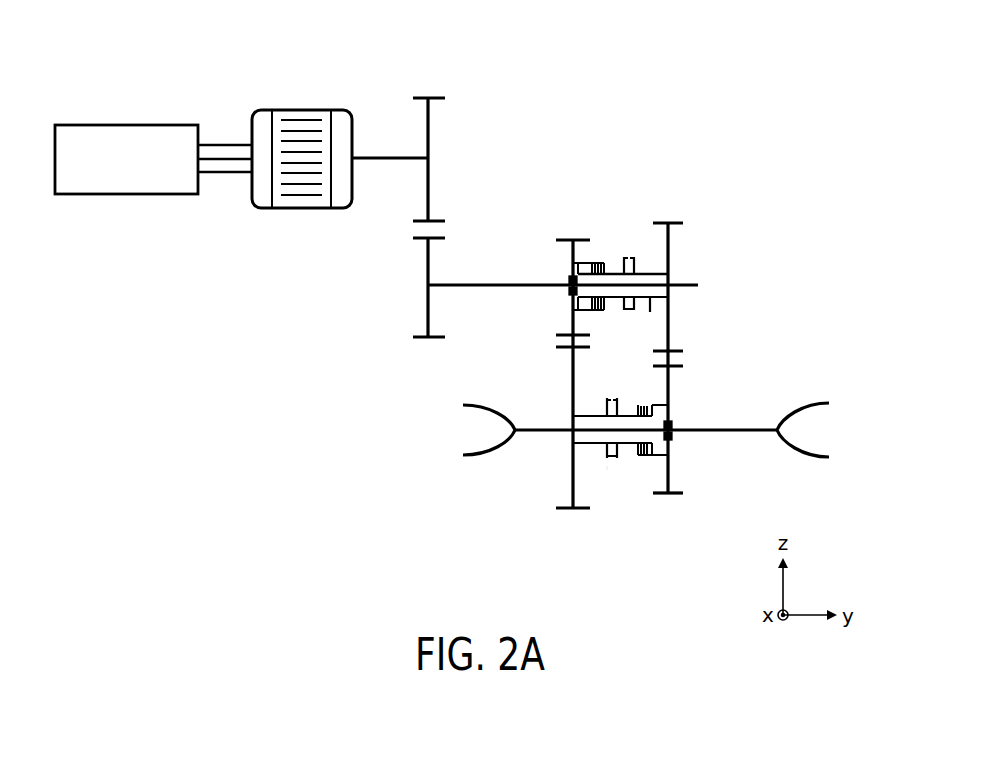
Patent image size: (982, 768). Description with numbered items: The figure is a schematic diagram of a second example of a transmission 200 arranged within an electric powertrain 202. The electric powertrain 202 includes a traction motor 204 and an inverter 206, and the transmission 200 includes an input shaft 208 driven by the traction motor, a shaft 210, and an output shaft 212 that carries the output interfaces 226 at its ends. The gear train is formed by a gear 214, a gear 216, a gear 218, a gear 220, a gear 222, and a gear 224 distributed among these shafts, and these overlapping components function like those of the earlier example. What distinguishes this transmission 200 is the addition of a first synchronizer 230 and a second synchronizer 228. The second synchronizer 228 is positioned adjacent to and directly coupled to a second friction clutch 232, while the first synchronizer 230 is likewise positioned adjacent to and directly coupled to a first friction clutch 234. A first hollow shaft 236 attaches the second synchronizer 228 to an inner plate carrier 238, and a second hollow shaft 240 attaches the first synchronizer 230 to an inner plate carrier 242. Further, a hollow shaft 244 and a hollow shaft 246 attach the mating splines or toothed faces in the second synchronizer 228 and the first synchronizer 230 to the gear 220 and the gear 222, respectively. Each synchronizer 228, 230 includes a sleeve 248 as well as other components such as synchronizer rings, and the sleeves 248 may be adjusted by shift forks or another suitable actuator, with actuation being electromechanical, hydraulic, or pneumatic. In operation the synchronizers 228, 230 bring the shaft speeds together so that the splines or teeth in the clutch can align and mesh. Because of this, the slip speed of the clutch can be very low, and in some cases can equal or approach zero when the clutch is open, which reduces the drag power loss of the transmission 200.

The transmission 200 is at (794, 153).
The electric powertrain 202 is at (62, 46).
The traction motor 204 is at (306, 110).
The inverter 206 is at (135, 124).
The input shaft 208 is at (390, 157).
The shaft 210 is at (490, 284).
The output shaft 212 is at (537, 428).
The gear 214 is at (425, 97).
The gear 216 is at (420, 340).
The gear 218 is at (563, 239).
The gear 220 is at (562, 510).
The gear 222 is at (662, 222).
The gear 224 is at (672, 495).
The output interfaces 226 is at (851, 425).
The second synchronizer 228 is at (606, 470).
The first synchronizer 230 is at (627, 252).
The second friction clutch 232 is at (636, 470).
The first friction clutch 234 is at (598, 258).
The first hollow shaft 236 is at (630, 416).
The inner plate carrier 238 is at (651, 415).
The second hollow shaft 240 is at (612, 299).
The inner plate carrier 242 is at (590, 273).
The hollow shaft 244 is at (590, 416).
The hollow shaft 246 is at (650, 299).
The sleeve 248 is at (637, 258).